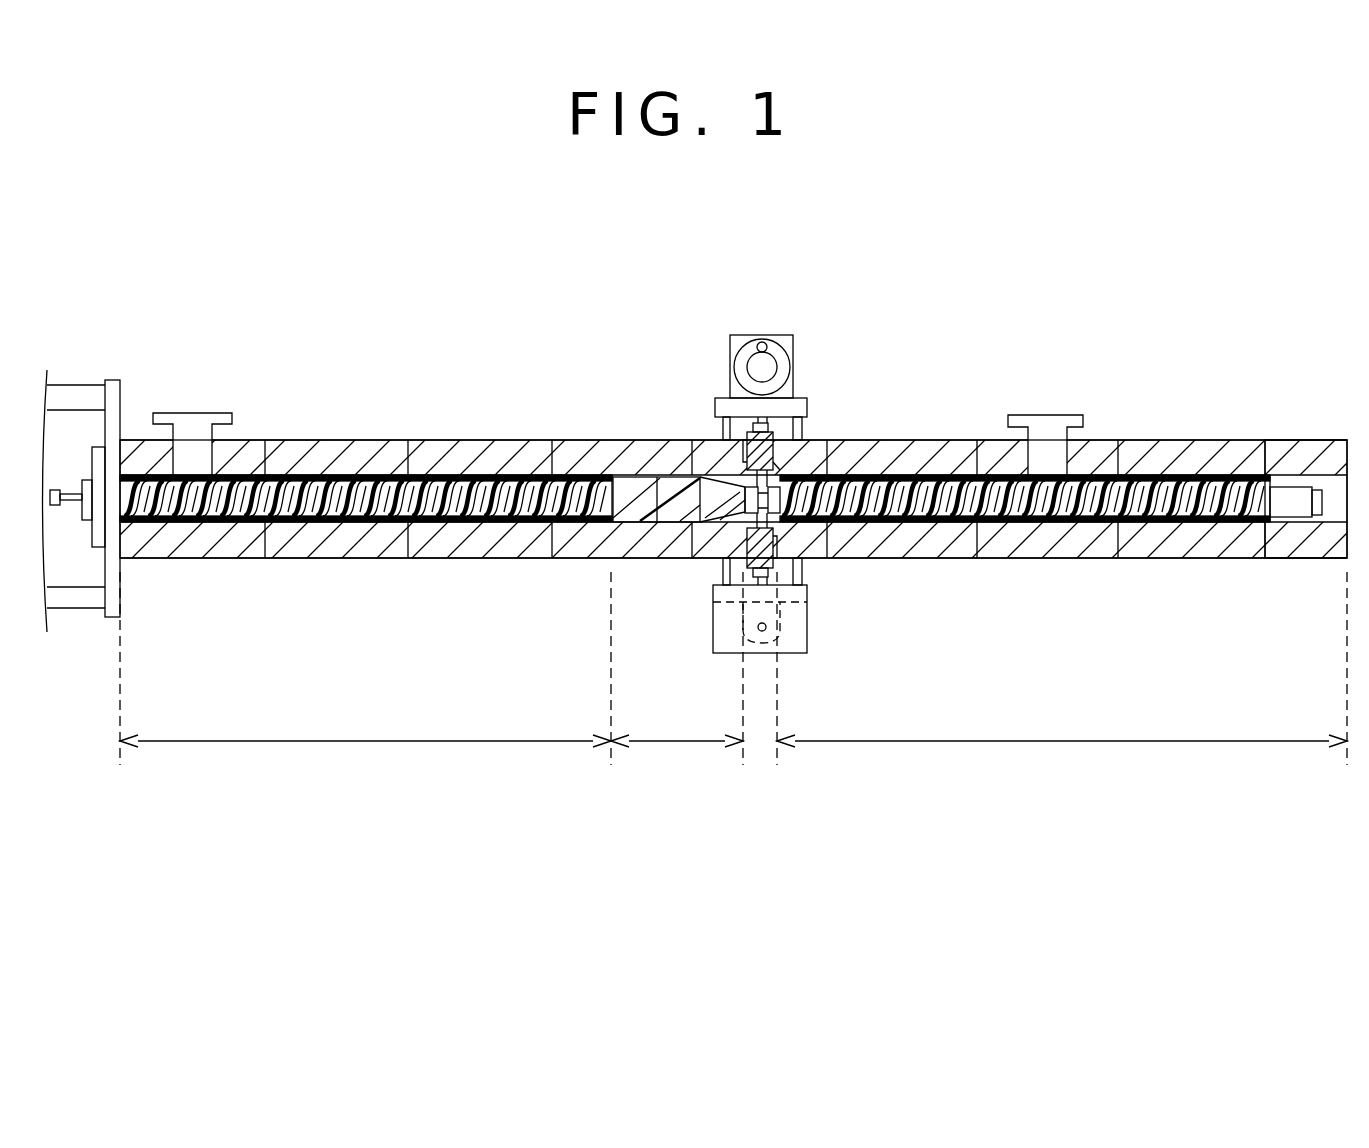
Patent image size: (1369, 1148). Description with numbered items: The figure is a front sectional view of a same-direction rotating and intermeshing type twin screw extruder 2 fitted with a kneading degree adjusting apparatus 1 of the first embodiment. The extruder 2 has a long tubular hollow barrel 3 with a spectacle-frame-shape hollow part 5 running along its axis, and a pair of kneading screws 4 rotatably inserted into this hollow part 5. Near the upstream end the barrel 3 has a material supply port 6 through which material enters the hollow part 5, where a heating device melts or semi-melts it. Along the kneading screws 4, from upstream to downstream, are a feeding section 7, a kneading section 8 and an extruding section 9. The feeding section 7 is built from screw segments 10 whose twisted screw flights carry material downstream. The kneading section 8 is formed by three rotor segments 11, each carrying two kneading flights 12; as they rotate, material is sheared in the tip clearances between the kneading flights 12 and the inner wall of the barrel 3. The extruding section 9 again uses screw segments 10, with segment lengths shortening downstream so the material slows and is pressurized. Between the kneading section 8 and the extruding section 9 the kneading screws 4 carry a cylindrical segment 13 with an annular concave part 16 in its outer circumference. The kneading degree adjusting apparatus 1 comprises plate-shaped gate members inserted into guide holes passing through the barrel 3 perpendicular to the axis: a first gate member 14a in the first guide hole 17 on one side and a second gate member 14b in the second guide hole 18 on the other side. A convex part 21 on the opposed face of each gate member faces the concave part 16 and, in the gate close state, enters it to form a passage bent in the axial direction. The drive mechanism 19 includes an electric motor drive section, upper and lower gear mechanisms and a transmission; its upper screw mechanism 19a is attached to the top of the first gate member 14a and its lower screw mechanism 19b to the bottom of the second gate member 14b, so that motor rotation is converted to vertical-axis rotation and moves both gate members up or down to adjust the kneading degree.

The kneading degree adjusting apparatus 1 is at (820, 358).
The twin screw extruder 2 is at (1171, 300).
The barrel 3 is at (1333, 470).
The kneading screw 4 is at (1286, 494).
The hollow part 5 is at (1328, 520).
The material supply port 6 is at (212, 437).
The feeding section 7 is at (367, 742).
The kneading section 8 is at (672, 742).
The extruding section 9 is at (1072, 742).
The screw segment 10 is at (322, 470).
The rotor segment 11 is at (627, 487).
The kneading flight 12 is at (660, 495).
The cylindrical segment 13 is at (778, 515).
The first gate member 14a is at (775, 445).
The second gate member 14b is at (752, 576).
The concave part 16 is at (748, 535).
The first guide hole 17 is at (748, 445).
The second guide hole 18 is at (772, 558).
The drive mechanism 19 is at (760, 335).
The upper screw mechanism 19a is at (755, 425).
The lower screw mechanism 19b is at (772, 585).
The convex part 21 is at (780, 468).